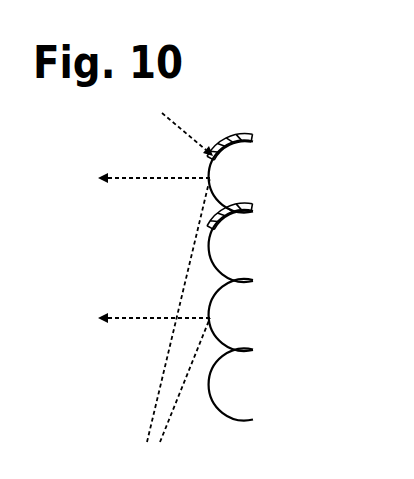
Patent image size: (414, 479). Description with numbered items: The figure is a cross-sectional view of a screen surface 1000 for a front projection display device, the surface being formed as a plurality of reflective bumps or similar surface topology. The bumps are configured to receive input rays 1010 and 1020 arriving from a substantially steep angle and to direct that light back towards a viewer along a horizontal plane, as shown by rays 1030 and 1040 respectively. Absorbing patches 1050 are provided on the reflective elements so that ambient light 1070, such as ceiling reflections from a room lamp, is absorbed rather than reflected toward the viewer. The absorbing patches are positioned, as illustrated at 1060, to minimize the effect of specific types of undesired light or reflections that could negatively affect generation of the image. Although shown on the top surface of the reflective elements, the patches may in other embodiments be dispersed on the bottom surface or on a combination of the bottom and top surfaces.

The screen surface 1000 is at (302, 172).
The input ray 1010 is at (151, 428).
The input ray 1020 is at (172, 413).
The ray 1030 is at (147, 315).
The ray 1040 is at (152, 176).
The absorbing patch 1050 is at (233, 153).
The absorbing patch position 1060 is at (220, 141).
The ambient light 1070 is at (162, 112).